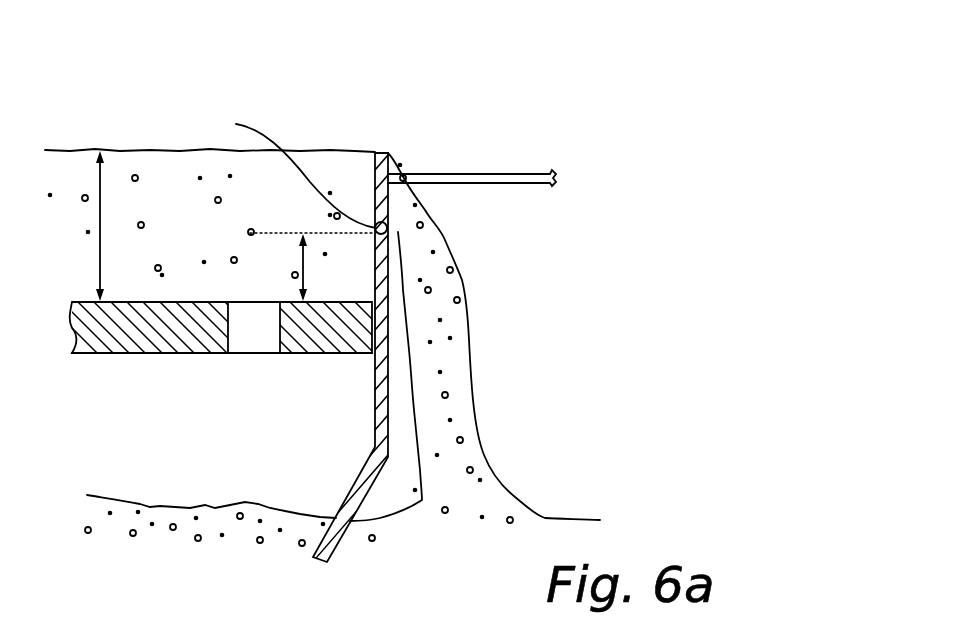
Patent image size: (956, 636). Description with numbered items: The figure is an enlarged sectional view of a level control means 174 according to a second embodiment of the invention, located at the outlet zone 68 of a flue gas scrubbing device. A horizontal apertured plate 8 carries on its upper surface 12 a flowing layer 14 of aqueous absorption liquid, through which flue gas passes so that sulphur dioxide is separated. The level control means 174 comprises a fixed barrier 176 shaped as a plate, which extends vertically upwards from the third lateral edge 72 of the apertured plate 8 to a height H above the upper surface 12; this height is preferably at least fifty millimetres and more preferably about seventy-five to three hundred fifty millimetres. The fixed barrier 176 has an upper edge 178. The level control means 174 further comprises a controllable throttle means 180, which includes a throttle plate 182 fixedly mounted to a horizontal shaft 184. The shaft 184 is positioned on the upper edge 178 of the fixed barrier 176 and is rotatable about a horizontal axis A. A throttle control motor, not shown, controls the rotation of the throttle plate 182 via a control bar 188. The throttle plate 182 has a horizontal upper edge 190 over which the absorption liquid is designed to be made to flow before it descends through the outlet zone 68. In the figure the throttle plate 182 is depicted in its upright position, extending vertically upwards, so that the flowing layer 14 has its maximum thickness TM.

The flowing layer 14 is at (141, 160).
The upper surface 12 is at (188, 301).
The apertured plate 8 is at (148, 354).
The third lateral edge 72 is at (376, 337).
The control bar 188 is at (512, 176).
The outlet zone 68 is at (522, 298).
The horizontal shaft 184 is at (279, 168).
The level control means 174 is at (338, 186).
The controllable throttle means 180 is at (368, 203).
The horizontal upper edge 190 is at (384, 152).
The throttle plate 182 is at (390, 195).
The horizontal axis A is at (388, 230).
The upper edge 178 is at (390, 232).
The fixed barrier 176 is at (376, 273).
The maximum thickness TM is at (122, 226).
The height H is at (287, 267).